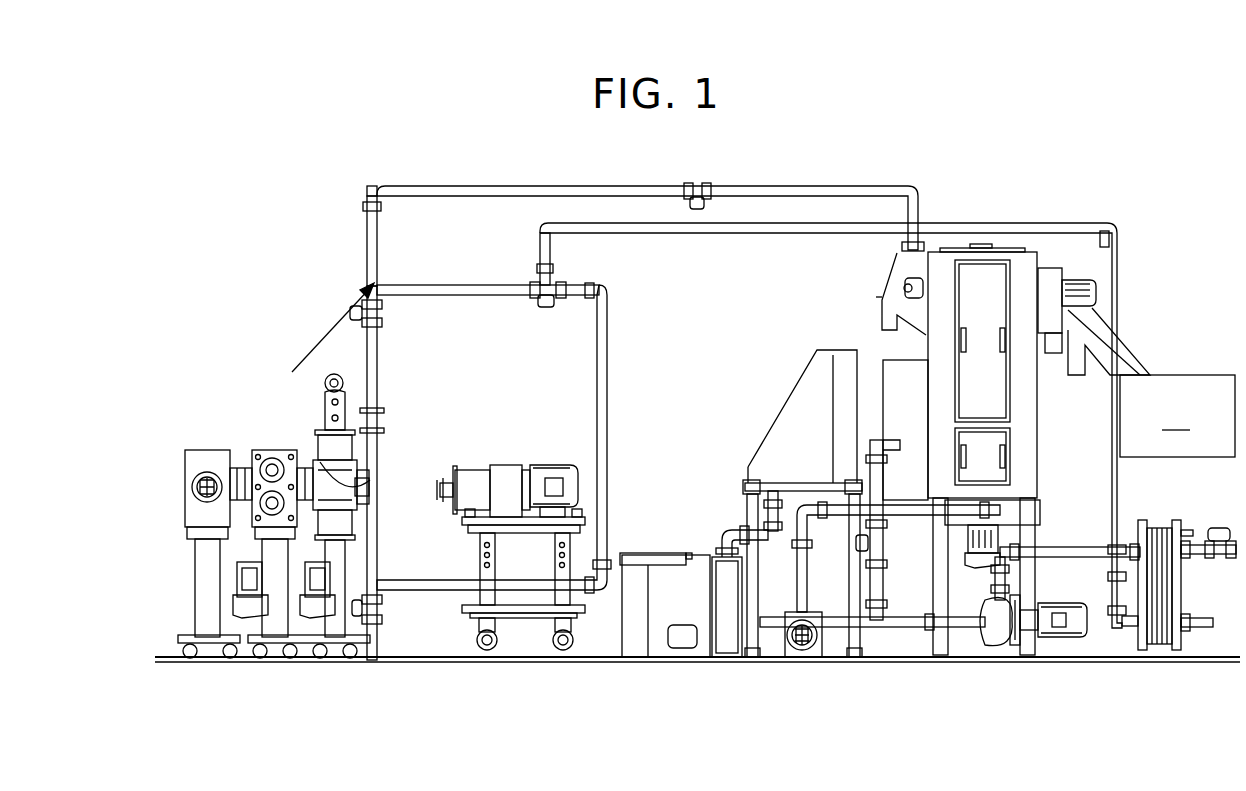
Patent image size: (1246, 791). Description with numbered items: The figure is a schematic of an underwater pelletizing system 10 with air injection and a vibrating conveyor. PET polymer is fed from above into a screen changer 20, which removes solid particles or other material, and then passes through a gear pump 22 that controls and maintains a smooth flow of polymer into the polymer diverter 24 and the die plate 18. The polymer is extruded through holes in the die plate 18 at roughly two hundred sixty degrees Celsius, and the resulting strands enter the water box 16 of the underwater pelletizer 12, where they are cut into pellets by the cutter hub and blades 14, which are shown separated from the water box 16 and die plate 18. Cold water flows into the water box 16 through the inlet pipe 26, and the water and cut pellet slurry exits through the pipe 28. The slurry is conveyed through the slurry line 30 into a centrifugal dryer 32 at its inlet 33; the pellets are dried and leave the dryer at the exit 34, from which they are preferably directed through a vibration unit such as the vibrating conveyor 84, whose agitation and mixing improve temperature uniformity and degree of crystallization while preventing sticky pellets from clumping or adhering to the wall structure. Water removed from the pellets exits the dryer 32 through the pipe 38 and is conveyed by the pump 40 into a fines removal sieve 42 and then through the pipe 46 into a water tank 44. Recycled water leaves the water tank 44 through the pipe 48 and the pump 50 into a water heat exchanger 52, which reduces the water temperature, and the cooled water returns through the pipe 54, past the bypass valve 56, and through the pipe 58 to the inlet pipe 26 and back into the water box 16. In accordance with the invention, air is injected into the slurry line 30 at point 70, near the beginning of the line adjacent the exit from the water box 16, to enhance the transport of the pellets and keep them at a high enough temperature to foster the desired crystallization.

The underwater pelletizing system 10 is at (345, 225).
The underwater pelletizer 12 is at (505, 470).
The cutter hub and blades 14 is at (446, 470).
The water box 16 is at (376, 506).
The die plate 18 is at (380, 545).
The screen changer 20 is at (190, 507).
The gear pump 22 is at (272, 512).
The polymer diverter 24 is at (310, 455).
The inlet pipe 26 is at (379, 530).
The pipe 28 is at (380, 343).
The slurry line 30 is at (425, 186).
The dryer 32 is at (968, 262).
The inlet 33 is at (905, 245).
The dryer exit 34 is at (1125, 368).
The pipe 38 is at (835, 515).
The pump 40 is at (800, 657).
The fines removal sieve 42 is at (802, 395).
The water tank 44 is at (655, 652).
The pipe 46 is at (727, 538).
The pipe 48 is at (900, 628).
The pump 50 is at (995, 630).
The water heat exchanger 52 is at (1160, 640).
The pipe 54 is at (683, 233).
The bypass valve 56 is at (540, 284).
The pipe 58 is at (607, 400).
The air injection point 70 is at (368, 262).
The vibrating conveyor 84 is at (1177, 416).